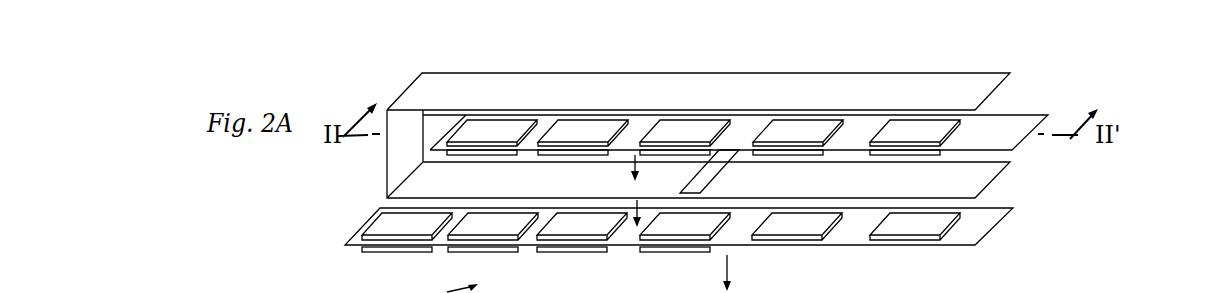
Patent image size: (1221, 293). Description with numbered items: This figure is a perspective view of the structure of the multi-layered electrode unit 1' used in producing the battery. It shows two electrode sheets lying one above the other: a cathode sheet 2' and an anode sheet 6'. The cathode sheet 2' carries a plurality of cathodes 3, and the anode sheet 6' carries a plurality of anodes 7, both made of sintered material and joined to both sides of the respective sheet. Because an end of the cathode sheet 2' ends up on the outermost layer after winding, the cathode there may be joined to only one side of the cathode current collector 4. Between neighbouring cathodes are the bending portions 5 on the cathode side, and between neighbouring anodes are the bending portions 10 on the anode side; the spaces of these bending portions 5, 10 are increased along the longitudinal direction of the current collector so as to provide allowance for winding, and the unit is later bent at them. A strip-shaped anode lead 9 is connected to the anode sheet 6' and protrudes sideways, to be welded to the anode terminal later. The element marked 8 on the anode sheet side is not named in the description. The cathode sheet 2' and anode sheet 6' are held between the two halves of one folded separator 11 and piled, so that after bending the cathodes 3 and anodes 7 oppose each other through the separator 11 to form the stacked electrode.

The multi-layered electrode unit 1' is at (778, 165).
The cathode sheet 2' is at (754, 250).
The cathodes 3 is at (922, 228).
The cathode current collector 4 is at (985, 223).
The bending portion on the cathode side 5 is at (848, 232).
The anode sheet 6' is at (793, 118).
The anodes 7 is at (930, 156).
The upper substrate 8 is at (872, 128).
The strip-shaped anode lead 9 is at (696, 177).
The bending portion on the anode side 10 is at (853, 137).
The separator 11 is at (987, 82).